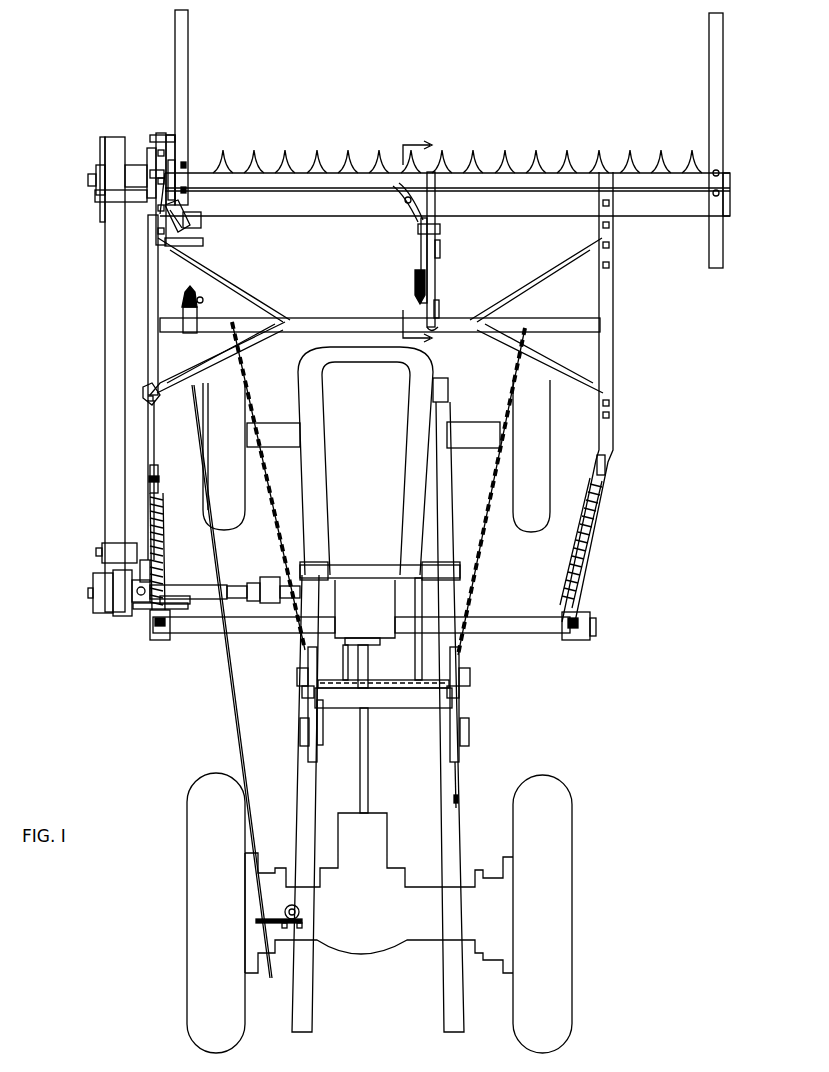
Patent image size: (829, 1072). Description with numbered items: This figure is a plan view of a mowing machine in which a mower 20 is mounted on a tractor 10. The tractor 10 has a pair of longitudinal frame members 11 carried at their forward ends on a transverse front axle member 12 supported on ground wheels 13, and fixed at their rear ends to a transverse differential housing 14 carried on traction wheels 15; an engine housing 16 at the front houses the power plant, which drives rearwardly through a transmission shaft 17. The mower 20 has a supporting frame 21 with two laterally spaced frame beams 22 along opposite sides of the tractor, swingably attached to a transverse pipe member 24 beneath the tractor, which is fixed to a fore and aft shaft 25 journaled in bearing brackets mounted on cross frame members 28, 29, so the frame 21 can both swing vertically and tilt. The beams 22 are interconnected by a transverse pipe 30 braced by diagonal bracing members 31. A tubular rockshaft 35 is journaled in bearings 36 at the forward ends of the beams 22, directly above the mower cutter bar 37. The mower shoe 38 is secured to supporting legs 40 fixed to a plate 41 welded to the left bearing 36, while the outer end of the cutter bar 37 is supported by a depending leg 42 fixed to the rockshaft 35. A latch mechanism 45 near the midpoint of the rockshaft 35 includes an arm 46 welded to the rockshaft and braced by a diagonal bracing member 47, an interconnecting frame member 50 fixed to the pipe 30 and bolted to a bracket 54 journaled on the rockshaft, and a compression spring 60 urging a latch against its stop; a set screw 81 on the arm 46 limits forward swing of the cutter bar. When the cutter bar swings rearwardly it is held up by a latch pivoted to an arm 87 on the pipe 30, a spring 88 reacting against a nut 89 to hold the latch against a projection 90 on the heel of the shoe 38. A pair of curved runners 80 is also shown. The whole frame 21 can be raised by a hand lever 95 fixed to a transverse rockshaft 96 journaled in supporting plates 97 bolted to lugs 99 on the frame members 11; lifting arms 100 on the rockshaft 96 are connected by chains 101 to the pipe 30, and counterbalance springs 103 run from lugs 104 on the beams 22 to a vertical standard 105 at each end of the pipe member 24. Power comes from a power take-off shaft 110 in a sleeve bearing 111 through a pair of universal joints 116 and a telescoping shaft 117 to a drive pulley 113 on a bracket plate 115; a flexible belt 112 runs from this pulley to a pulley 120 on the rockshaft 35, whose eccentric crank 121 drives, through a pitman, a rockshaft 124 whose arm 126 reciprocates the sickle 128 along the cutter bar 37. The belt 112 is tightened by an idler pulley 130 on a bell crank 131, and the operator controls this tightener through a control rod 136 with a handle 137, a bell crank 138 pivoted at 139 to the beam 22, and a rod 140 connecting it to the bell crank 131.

The tractor 10 is at (578, 838).
The longitudinally extending frame members 11 is at (300, 787).
The transverse front axle member 12 is at (458, 425).
The ground wheels 13 is at (232, 522).
The transverse differential housing 14 is at (386, 940).
The traction wheels 15 is at (205, 1032).
The engine housing 16 is at (368, 476).
The transmission shaft 17 is at (368, 748).
The mower 20 is at (576, 128).
The supporting frame 21 is at (615, 385).
The frame beams 22 is at (146, 350).
The transverse pipe member 24 is at (493, 634).
The fore and aft extending shaft 25 is at (368, 660).
The cross frame member 28 is at (420, 570).
The cross frame member 29 is at (393, 680).
The transverse frame member (pipe) 30 is at (325, 320).
The diagonal bracing members 31 is at (215, 282).
The tubular rockshaft 35 is at (298, 176).
The bearings 36 is at (155, 160).
The mower cutter bar 37 is at (336, 218).
The mower shoe 38 is at (192, 140).
The supporting legs 40 is at (162, 134).
The plate 41 is at (170, 170).
The depending leg 42 is at (726, 178).
The latch mechanism 45 is at (442, 250).
The arm 46 is at (421, 240).
The diagonal bracing member 47 is at (398, 214).
The interconnecting frame member 50 is at (436, 292).
The bracket 54 is at (434, 172).
The compression spring 60 is at (414, 285).
The curved runners 80 is at (188, 38).
The set screw 81 is at (440, 229).
The arm 87 is at (194, 333).
The spring 88 is at (182, 304).
The nut 89 is at (209, 307).
The projection 90 is at (203, 242).
The hand lever 95 is at (456, 782).
The transverse rockshaft 96 is at (329, 722).
The supporting plates 97 is at (308, 716).
The lug 99 is at (302, 738).
The lifting arms 100 is at (306, 664).
The chains 101 is at (250, 400).
The springs 103 is at (164, 552).
The lugs 104 is at (159, 475).
The vertical standard 105 is at (162, 640).
The power take-off shaft 110 is at (270, 580).
The sleeve bearing 111 is at (330, 572).
The flexible belt 112 is at (107, 497).
The drive pulley 113 is at (135, 605).
The bracket plate 115 is at (96, 606).
The universal joints 116 is at (238, 582).
The telescoping shaft 117 is at (188, 605).
The pulley 120 is at (103, 140).
The eccentric crank 121 is at (94, 181).
The rockshaft 124 is at (150, 150).
The arm 126 is at (147, 175).
The sickle 128 is at (323, 172).
The idler pulley 130 is at (105, 545).
The bell crank 131 is at (150, 555).
The control rod 136 is at (238, 738).
The handle 137 is at (271, 978).
The bell crank 138 is at (183, 390).
The pivot 139 is at (153, 402).
The rod 140 is at (149, 450).